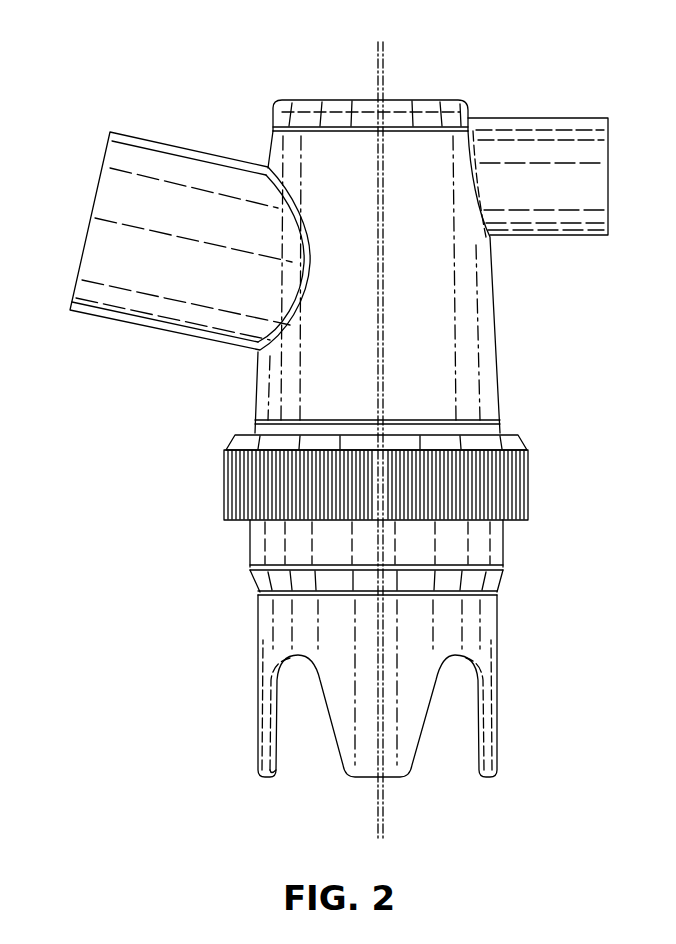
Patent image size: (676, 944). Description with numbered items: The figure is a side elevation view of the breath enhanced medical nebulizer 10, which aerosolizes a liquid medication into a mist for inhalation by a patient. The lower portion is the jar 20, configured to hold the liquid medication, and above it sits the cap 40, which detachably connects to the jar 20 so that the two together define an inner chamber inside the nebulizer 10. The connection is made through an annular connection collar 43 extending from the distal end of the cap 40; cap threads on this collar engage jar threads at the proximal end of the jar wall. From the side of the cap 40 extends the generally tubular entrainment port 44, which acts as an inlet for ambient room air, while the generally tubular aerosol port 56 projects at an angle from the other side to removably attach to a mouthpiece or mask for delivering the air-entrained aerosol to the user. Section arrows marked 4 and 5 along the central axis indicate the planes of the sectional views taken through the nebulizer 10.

The breath enhanced medical nebulizer 10 is at (172, 463).
The jar 20 is at (472, 613).
The cap 40 is at (462, 337).
The annular connection collar 43 is at (530, 480).
The entrainment port 44 is at (535, 145).
The aerosol port 56 is at (133, 210).
The section line 4- 4 is at (377, 55).
The section line 5- 5 is at (384, 55).